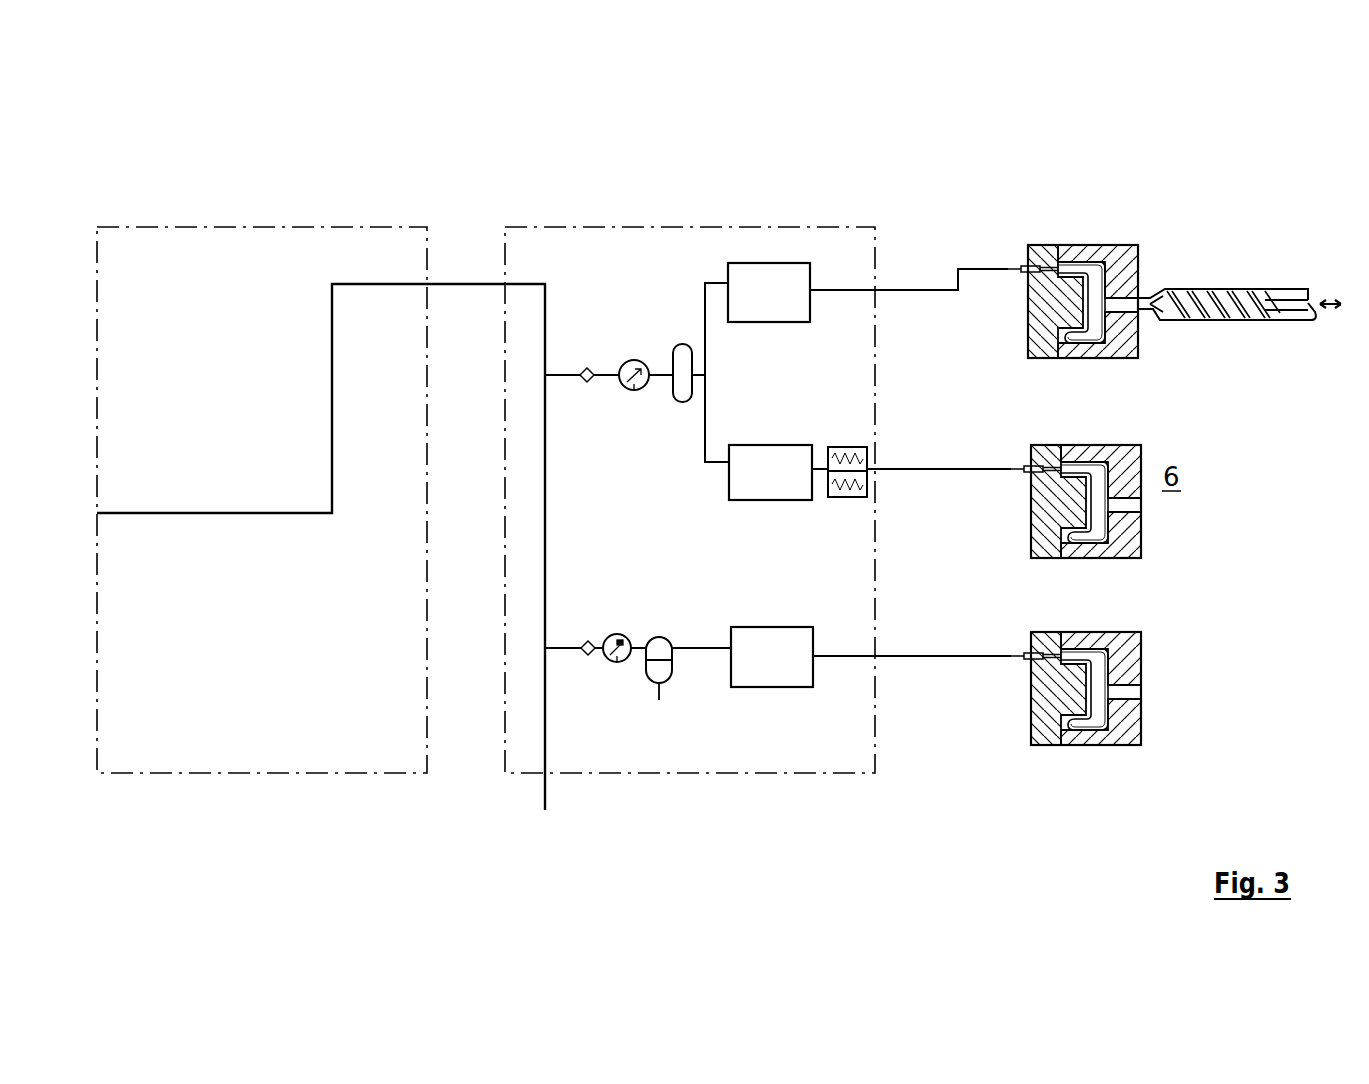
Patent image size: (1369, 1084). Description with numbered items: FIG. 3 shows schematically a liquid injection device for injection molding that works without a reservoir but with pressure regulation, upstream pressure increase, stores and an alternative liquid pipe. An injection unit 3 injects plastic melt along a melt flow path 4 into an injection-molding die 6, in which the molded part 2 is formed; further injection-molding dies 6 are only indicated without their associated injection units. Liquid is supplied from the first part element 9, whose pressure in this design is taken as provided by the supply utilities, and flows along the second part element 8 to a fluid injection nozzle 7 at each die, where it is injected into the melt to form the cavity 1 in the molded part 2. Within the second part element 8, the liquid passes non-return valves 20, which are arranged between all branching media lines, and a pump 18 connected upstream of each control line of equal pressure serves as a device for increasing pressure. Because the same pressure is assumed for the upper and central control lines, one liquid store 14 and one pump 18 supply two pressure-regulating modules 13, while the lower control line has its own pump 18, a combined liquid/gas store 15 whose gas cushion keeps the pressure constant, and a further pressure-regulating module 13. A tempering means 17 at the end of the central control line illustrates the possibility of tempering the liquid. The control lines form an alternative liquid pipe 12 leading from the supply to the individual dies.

The cavity 1 is at (1072, 268).
The molded part 2 is at (1137, 273).
The injection unit 3 is at (1238, 269).
The melt flow path 4 is at (1150, 292).
The injection-molding die 6 is at (1108, 264).
The fluid injection nozzle 7 is at (1052, 268).
The second part element 8 is at (540, 225).
The first part element 9 is at (102, 229).
The hydraulic supply line 12 is at (332, 397).
The pressure-regulating module 13 is at (795, 458).
The liquid store 14 is at (685, 360).
The combined liquid/gas store 15 is at (655, 637).
The tempering means 17 is at (868, 458).
The pump 18 is at (632, 391).
The non-return valve 20 is at (591, 641).